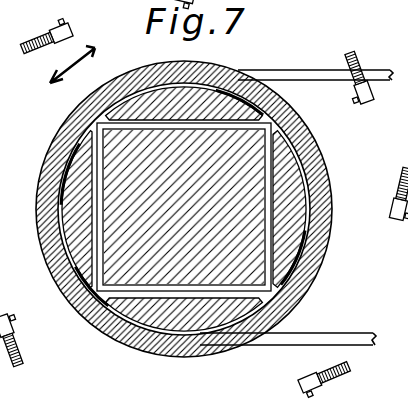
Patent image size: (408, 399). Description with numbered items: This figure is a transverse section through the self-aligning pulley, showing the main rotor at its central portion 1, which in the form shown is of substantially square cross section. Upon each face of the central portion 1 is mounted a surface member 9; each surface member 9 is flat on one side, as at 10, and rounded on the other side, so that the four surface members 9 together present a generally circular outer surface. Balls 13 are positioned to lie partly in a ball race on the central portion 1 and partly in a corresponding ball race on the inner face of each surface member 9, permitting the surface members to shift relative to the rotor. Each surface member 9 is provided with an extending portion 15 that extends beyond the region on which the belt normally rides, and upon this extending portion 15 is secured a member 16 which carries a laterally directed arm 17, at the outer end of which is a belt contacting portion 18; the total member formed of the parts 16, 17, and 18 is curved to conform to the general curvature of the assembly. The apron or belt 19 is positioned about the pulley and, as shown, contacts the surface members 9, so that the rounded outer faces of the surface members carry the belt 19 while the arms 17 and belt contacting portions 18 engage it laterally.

The central portion 1 is at (240, 208).
The surface member 9 is at (112, 93).
The flat side 10 is at (209, 274).
The ball 13 is at (272, 127).
The extending portion 15 is at (322, 175).
The member 16 is at (163, 63).
The laterally directed arm 17 is at (250, 73).
The belt contacting portion 18 is at (238, 72).
The apron or belt 19 is at (356, 75).